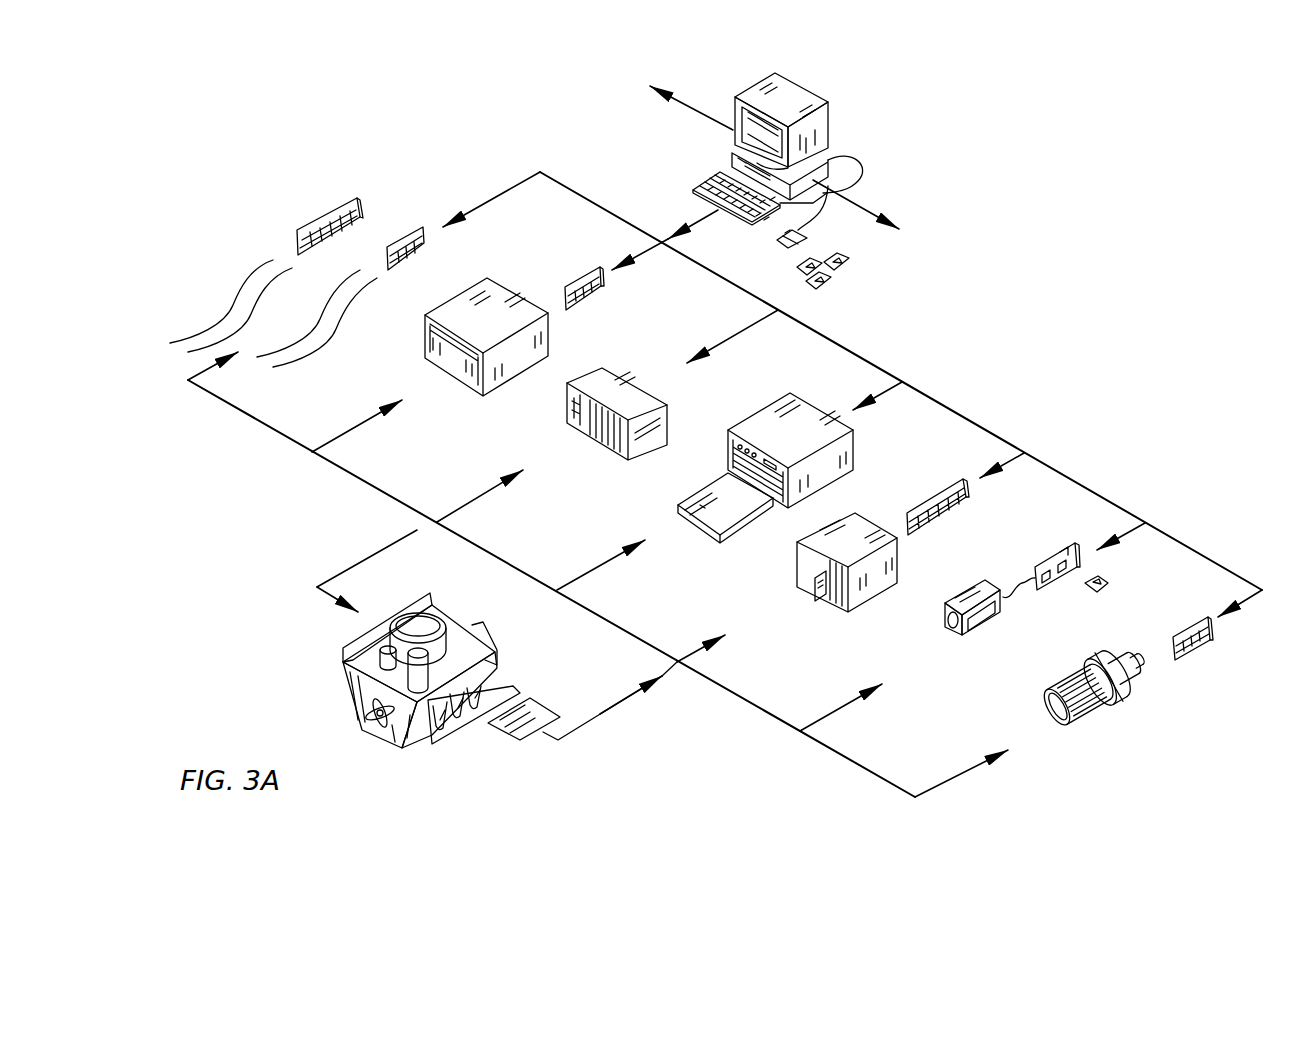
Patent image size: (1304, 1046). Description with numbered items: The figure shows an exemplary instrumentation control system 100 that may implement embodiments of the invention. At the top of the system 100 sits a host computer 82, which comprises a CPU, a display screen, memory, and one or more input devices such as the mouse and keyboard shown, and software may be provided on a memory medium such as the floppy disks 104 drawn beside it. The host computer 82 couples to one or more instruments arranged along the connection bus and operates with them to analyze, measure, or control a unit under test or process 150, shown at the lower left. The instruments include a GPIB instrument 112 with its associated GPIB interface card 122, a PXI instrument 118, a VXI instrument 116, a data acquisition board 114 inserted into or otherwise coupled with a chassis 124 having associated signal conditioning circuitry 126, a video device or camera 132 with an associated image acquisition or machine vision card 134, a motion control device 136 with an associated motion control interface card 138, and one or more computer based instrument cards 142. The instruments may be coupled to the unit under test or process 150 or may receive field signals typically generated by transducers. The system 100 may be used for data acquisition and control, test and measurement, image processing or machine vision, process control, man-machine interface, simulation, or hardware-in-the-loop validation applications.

The instrumentation control system 100 is at (1071, 147).
The host computer 82 is at (799, 90).
The floppy disks 104 is at (825, 283).
The computer based instrument cards 142 is at (313, 226).
The GPIB instrument 112 is at (448, 306).
The GPIB interface card 122 is at (580, 278).
The PXI instrument 118 is at (597, 447).
The VXI instrument 116 is at (763, 418).
The data acquisition board 114 is at (937, 545).
The chassis 124 is at (797, 577).
The signal conditioning circuitry 126 is at (820, 595).
The video device or camera 132 is at (980, 627).
The image acquisition card 134 is at (1048, 553).
The motion control device 136 is at (1093, 708).
The motion control interface card 138 is at (1195, 650).
The unit under test or process 150 is at (343, 700).